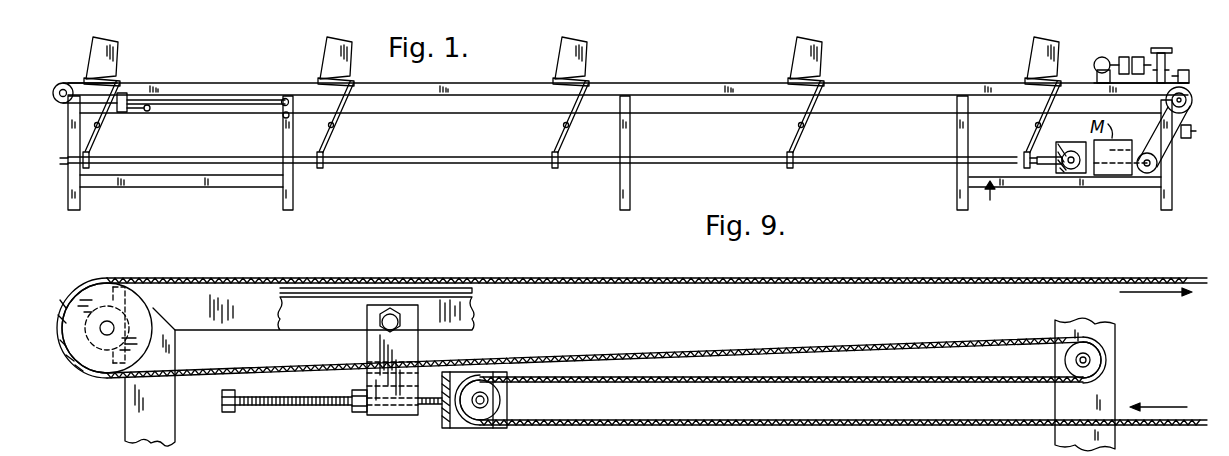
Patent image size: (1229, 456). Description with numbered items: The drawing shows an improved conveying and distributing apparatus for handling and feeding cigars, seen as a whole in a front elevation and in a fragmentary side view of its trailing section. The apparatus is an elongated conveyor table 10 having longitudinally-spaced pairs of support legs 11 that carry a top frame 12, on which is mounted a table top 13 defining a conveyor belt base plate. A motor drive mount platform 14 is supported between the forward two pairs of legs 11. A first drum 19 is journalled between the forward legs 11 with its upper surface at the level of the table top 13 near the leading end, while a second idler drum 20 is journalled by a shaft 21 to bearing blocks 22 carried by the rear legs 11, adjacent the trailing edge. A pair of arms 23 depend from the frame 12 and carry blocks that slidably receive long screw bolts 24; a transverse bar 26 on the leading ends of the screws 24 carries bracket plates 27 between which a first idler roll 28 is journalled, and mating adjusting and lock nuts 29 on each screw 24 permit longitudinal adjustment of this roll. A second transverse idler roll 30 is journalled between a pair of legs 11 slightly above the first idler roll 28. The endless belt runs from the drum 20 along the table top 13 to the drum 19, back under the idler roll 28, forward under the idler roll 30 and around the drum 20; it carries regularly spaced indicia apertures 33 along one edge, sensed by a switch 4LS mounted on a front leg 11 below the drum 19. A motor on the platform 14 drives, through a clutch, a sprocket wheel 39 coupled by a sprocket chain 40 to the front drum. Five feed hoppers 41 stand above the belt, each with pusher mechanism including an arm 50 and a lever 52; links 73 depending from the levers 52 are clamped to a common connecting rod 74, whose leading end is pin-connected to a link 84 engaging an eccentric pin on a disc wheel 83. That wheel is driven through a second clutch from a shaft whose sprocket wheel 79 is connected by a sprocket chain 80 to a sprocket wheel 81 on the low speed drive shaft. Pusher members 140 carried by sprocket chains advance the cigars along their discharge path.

In FIG. 1, the conveyor table 10 is at (672, 192).
In FIG. 1, the support legs 11 is at (630, 148).
In FIG. 9, the support legs 11 is at (130, 423).
In FIG. 1, the top frame 12 is at (892, 70).
In FIG. 9, the top frame 12 is at (475, 314).
In FIG. 9, the table top 13 is at (477, 290).
In FIG. 1, the motor drive mount platform 14 is at (984, 192).
In FIG. 1, the first drum 19 is at (1191, 99).
In FIG. 1, the second idler drum 20 is at (68, 100).
In FIG. 9, the second idler drum 20 is at (86, 368).
In FIG. 9, the shaft 21 is at (114, 327).
In FIG. 9, the bearing blocks 22 is at (123, 287).
In FIG. 1, the arms 23 is at (126, 99).
In FIG. 9, the arms 23 is at (380, 344).
In FIG. 9, the screw bolts 24 is at (300, 410).
In FIG. 9, the transverse bar 26 is at (442, 424).
In FIG. 9, the bracket plates 27 is at (502, 401).
In FIG. 1, the first idler roll 28 is at (146, 112).
In FIG. 9, the first idler roll 28 is at (480, 408).
In FIG. 9, the nuts 29 is at (356, 412).
In FIG. 1, the second transverse idler roll 30 is at (281, 105).
In FIG. 9, the second transverse idler roll 30 is at (1092, 358).
In FIG. 9, the indicia-defining apertures 33 is at (190, 380).
In FIG. 1, the sprocket wheel 39 is at (1142, 173).
In FIG. 1, the sprocket chain 40 is at (1162, 140).
In FIG. 1, the feed hoppers 41 is at (115, 62).
In FIG. 1, the switch 4LS is at (1204, 125).
In FIG. 1, the arm 50 is at (349, 100).
In FIG. 1, the lever 52 is at (330, 140).
In FIG. 1, the pivoted link 73 is at (318, 168).
In FIG. 1, the connecting rod 74 is at (458, 165).
In FIG. 9, the sprocket wheel 79 is at (698, 447).
In FIG. 9, the sprocket chain 80 is at (881, 447).
In FIG. 9, the sprocket wheel 81 is at (1013, 447).
In FIG. 1, the disc wheel 83 is at (1070, 181).
In FIG. 1, the link 84 is at (1040, 157).
In FIG. 1, the pusher members 140 is at (1172, 51).